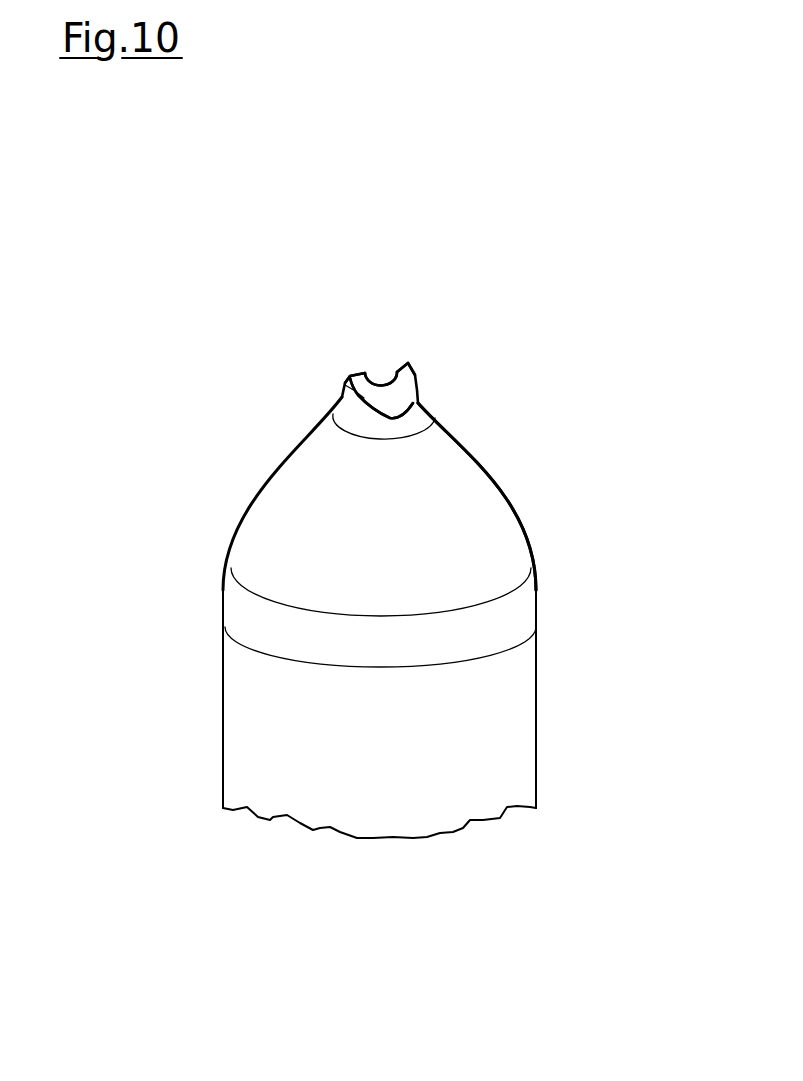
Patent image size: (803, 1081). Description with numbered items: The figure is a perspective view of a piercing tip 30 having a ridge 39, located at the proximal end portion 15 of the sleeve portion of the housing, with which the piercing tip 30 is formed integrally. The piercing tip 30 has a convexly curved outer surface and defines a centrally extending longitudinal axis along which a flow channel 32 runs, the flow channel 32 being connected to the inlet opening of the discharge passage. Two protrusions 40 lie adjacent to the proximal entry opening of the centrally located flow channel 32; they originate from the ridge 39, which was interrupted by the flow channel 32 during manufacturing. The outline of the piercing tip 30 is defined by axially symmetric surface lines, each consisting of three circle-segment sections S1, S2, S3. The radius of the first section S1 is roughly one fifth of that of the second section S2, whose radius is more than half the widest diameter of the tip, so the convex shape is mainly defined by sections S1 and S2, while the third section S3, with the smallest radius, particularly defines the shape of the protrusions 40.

The proximal end portion 15 is at (498, 772).
The piercing tip 30 is at (330, 510).
The flow channel 32 is at (383, 380).
The ridge 39 is at (333, 364).
The protrusions 40 is at (353, 373).
The first section S1 is at (537, 587).
The second section S2 is at (490, 472).
The third section S3 is at (421, 404).